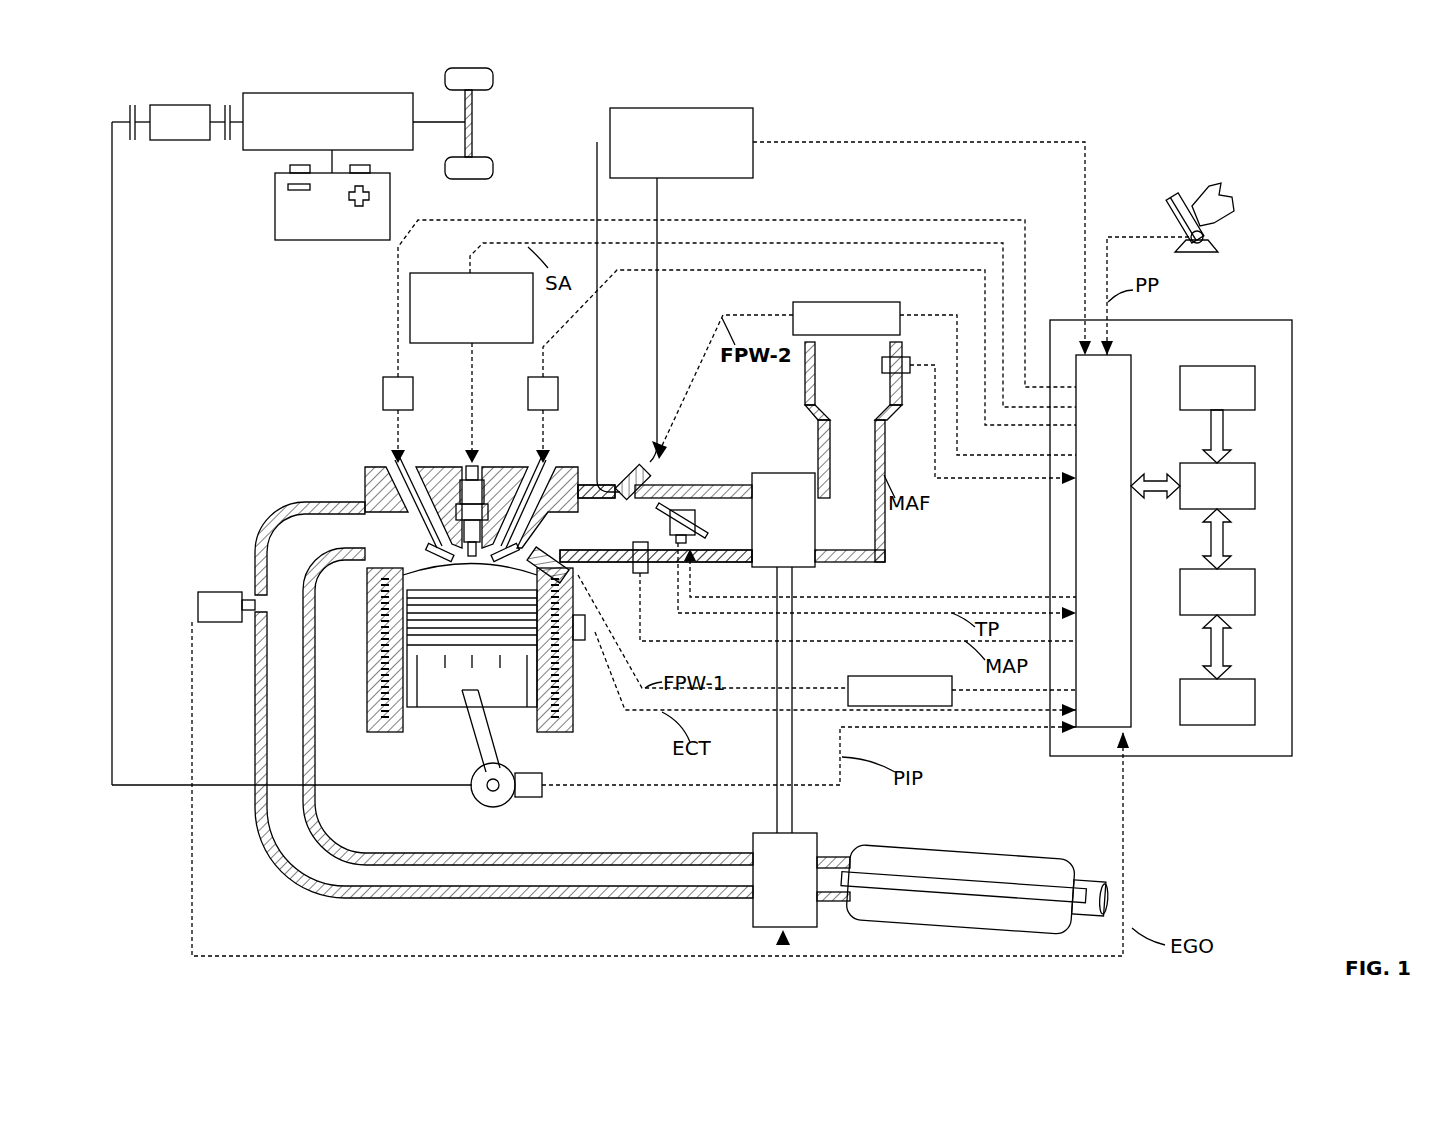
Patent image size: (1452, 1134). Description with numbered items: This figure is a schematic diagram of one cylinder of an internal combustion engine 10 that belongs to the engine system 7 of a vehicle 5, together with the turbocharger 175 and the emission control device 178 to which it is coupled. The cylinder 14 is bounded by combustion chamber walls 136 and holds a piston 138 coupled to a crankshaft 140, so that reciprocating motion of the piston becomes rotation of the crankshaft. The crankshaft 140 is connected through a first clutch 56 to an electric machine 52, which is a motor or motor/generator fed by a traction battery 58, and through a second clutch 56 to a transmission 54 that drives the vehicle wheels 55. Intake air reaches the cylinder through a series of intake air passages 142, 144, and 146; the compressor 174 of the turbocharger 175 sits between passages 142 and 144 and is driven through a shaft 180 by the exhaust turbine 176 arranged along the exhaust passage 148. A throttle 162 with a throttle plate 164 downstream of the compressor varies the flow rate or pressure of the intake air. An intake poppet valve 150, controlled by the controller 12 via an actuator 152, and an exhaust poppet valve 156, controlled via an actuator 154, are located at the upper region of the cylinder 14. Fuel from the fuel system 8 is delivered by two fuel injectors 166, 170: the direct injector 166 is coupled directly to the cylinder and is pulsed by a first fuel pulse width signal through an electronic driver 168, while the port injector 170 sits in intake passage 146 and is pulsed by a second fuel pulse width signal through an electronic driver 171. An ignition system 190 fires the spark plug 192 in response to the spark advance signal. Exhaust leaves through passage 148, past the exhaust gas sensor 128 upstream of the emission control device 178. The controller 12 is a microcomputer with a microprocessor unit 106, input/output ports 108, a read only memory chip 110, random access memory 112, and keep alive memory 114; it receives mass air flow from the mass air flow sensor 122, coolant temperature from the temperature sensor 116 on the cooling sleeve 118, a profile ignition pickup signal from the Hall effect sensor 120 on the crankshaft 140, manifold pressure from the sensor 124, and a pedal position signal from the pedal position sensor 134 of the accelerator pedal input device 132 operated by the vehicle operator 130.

The vehicle 5 is at (1392, 128).
The engine system 7 is at (1252, 852).
The fuel system 8 is at (720, 108).
The internal combustion engine 10 is at (290, 412).
The controller 12 is at (1213, 522).
The cylinder 14 is at (372, 596).
The electric machine 52 is at (188, 142).
The transmission 54 is at (398, 150).
The vehicle wheels 55 is at (478, 178).
The clutches 56 is at (130, 112).
The traction battery 58 is at (338, 240).
The microprocessor unit 106 is at (1256, 482).
The input/output ports 108 is at (1134, 360).
The read only memory chip 110 is at (1256, 385).
The random access memory 112 is at (1256, 590).
The keep alive memory 114 is at (1256, 700).
The temperature sensor 116 is at (580, 642).
The cooling sleeve 118 is at (584, 642).
The Hall effect sensor 120 is at (538, 798).
The mass air flow sensor 122 is at (908, 357).
The manifold pressure sensor 124 is at (641, 580).
The exhaust gas sensor 128 is at (198, 598).
The vehicle operator 130 is at (1216, 209).
The input device 132 is at (1172, 215).
The pedal position sensor 134 is at (1210, 238).
The combustion chamber walls 136 is at (403, 726).
The piston 138 is at (468, 718).
The crankshaft 140 is at (478, 802).
The intake air passage 142 is at (853, 452).
The intake air passage 144 is at (656, 536).
The intake air passage 146 is at (656, 523).
The exhaust passage 148 is at (504, 700).
The intake poppet valve 150 is at (518, 482).
The actuator 152 is at (528, 386).
The actuator 154 is at (383, 388).
The exhaust poppet valve 156 is at (396, 504).
The throttle 162 is at (697, 485).
The throttle plate 164 is at (664, 503).
The fuel injector 166 is at (544, 554).
The electronic driver 168 is at (848, 680).
The fuel injector 170 is at (628, 472).
The electronic driver 171 is at (793, 306).
The compressor 174 is at (783, 520).
The turbocharger 175 is at (788, 948).
The exhaust turbine 176 is at (785, 880).
The emission control device 178 is at (1034, 852).
The shaft 180 is at (793, 800).
The ignition system 190 is at (466, 272).
The spark plug 192 is at (460, 476).